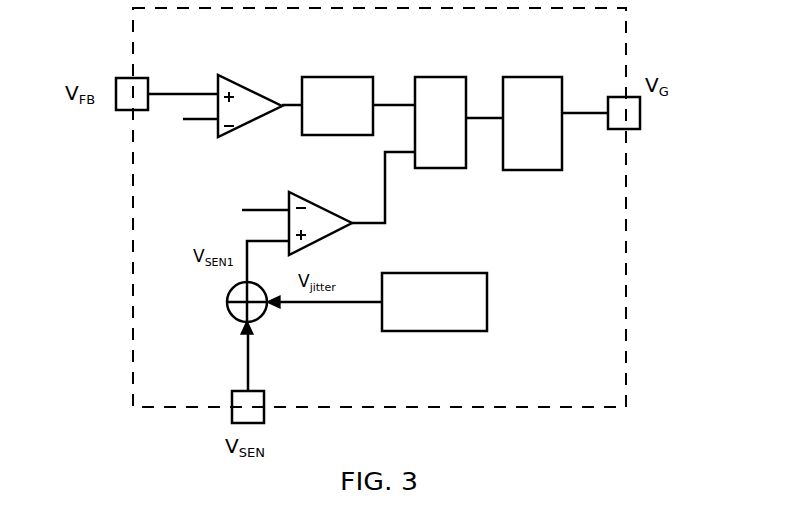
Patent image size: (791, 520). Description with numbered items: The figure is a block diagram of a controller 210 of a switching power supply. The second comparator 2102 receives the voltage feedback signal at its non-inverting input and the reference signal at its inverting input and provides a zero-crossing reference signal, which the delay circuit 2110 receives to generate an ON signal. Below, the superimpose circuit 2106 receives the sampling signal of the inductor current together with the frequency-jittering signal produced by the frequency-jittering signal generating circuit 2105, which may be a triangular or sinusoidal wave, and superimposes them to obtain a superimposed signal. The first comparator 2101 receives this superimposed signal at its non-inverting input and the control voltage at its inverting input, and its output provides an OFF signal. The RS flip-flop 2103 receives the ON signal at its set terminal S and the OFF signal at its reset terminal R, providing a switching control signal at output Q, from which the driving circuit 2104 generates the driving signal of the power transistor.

The controller 210 is at (584, 395).
The first comparator 2101 is at (303, 192).
The second comparator 2102 is at (242, 80).
The RS flip-flop 2103 is at (437, 75).
The driving circuit 2104 is at (522, 75).
The frequency-jittering signal generating circuit 2105 is at (435, 272).
The superimpose circuit 2106 is at (265, 313).
The delay circuit 2110 is at (355, 75).